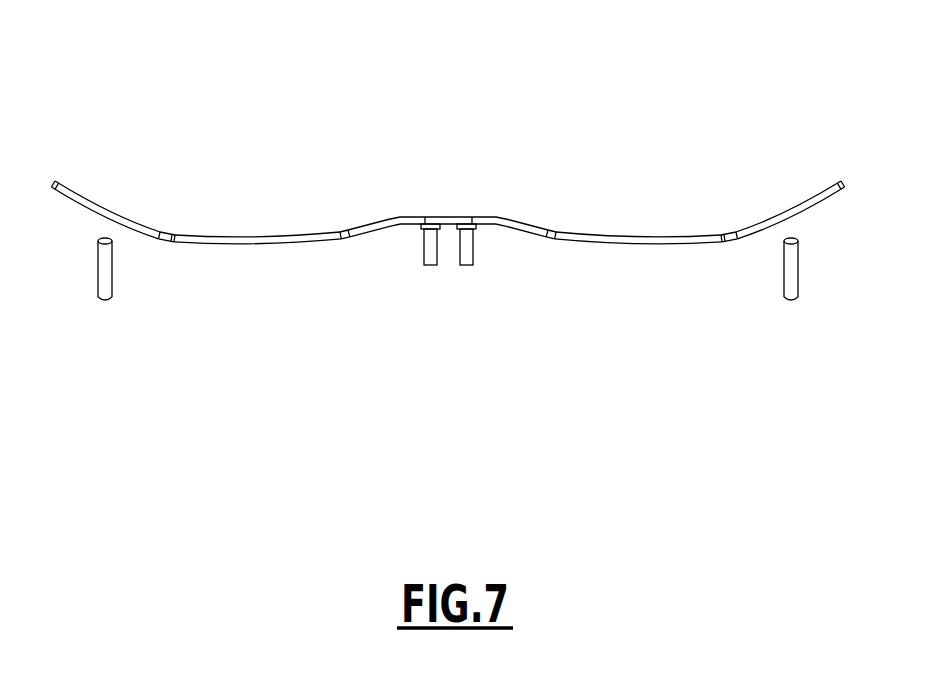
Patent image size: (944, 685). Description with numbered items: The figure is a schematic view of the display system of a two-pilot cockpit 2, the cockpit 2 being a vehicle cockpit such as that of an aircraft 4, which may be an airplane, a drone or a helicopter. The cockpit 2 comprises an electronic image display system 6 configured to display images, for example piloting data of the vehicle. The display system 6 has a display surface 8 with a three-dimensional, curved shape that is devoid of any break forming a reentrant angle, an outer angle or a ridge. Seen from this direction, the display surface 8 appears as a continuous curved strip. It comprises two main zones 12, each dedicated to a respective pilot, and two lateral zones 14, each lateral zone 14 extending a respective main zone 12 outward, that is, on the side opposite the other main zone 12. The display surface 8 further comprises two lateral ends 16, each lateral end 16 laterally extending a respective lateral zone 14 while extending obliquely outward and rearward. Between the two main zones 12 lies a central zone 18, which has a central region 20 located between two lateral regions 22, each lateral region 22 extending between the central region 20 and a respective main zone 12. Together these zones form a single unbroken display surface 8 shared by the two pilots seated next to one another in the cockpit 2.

The cockpit 2 is at (447, 155).
The aircraft 4 is at (447, 154).
The electronic image display system 6 is at (448, 168).
The display surface 8 is at (273, 235).
The main zone 12 is at (198, 235).
The lateral zone 14 is at (85, 201).
The lateral end 16 is at (801, 207).
The central zone 18 is at (470, 200).
The central region 20 is at (447, 215).
The lateral region 22 is at (402, 213).